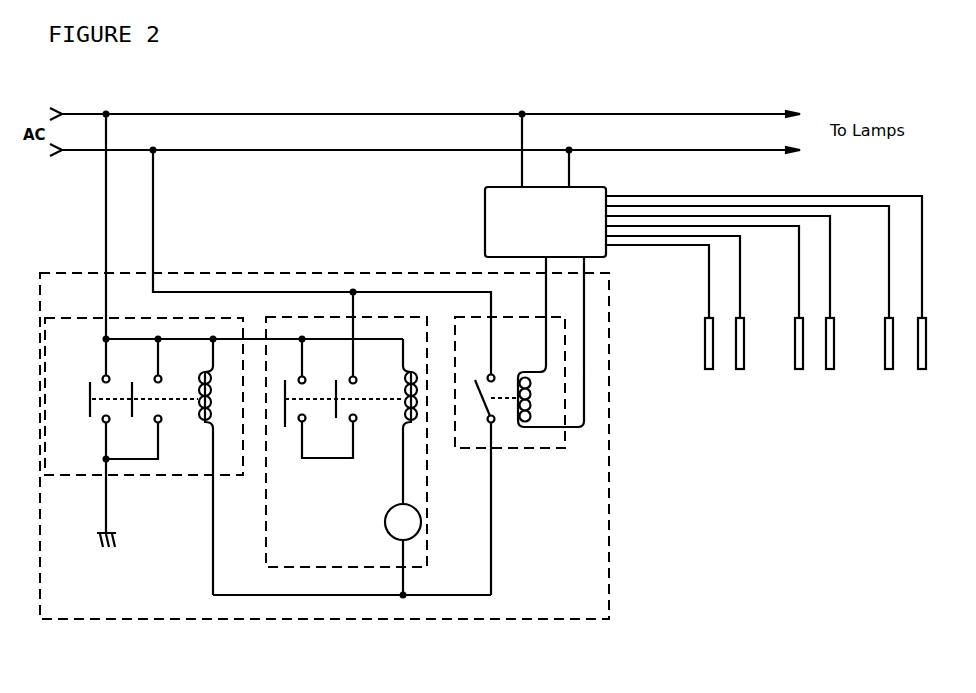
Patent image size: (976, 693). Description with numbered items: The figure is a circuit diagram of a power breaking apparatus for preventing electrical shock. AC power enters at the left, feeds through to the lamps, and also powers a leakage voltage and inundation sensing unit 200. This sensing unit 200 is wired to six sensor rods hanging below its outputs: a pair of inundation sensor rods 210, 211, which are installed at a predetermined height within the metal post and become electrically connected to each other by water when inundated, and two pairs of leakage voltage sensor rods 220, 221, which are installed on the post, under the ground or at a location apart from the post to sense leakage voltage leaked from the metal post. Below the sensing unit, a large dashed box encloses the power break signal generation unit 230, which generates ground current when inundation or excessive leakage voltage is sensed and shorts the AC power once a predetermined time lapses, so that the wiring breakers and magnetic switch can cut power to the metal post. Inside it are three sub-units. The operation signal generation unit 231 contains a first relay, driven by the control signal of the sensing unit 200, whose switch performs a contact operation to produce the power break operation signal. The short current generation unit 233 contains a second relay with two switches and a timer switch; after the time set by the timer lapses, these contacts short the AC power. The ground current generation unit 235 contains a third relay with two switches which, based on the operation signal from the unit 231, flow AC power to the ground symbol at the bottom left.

The leakage voltage and inundation sensing unit 200 is at (485, 220).
The inundation sensor rod 210 is at (709, 369).
The inundation sensor rod 211 is at (740, 369).
The leakage voltage sensor rod 220 is at (799, 369).
The leakage voltage sensor rod 221 is at (830, 369).
The power break signal generation unit 230 is at (610, 544).
The operation signal generation unit 231 is at (528, 448).
The short current generation unit 233 is at (337, 567).
The ground current generation unit 235 is at (183, 475).